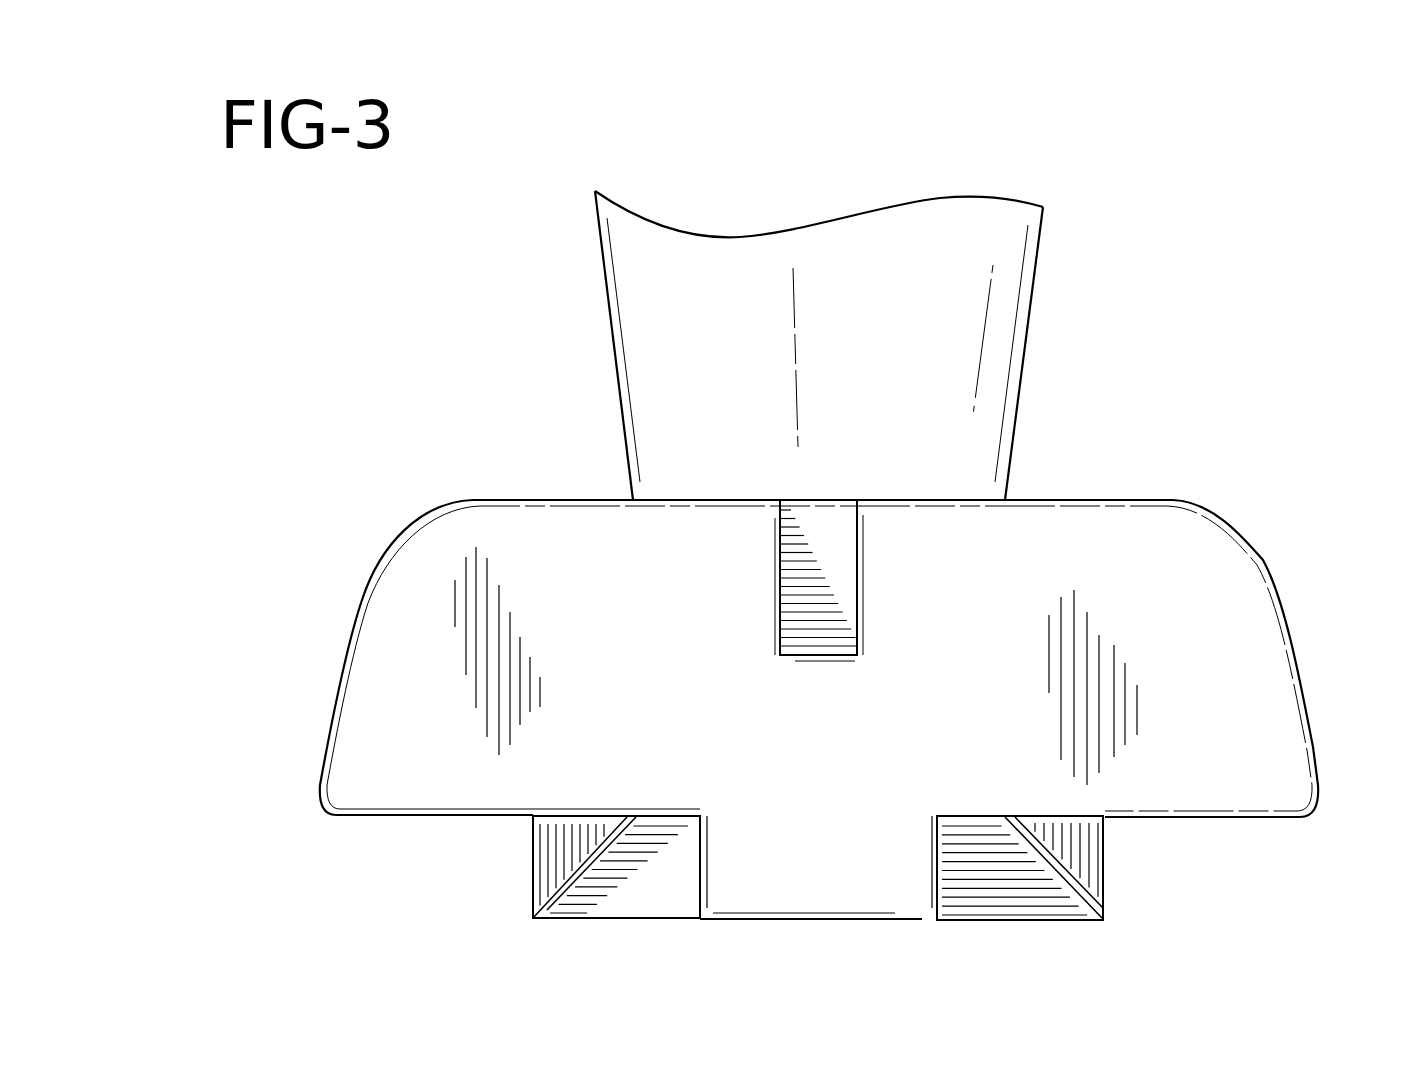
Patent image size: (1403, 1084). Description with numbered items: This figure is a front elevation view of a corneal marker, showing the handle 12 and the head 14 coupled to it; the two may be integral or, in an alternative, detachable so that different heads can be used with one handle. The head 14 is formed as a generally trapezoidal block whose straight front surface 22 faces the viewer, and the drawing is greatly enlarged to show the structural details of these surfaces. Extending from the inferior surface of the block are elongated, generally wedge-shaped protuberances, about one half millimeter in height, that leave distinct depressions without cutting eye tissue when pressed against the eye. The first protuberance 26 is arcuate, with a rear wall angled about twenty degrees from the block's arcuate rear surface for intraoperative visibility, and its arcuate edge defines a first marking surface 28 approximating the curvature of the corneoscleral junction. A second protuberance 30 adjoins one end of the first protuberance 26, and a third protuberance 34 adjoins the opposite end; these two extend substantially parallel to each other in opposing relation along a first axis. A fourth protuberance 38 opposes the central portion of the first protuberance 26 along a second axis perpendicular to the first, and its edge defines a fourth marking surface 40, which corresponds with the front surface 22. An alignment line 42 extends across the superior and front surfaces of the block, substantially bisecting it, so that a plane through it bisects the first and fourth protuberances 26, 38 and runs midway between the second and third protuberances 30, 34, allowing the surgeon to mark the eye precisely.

The handle 12 is at (595, 342).
The head 14 is at (312, 622).
The front surface 22 is at (1213, 590).
The first protuberance 26 is at (627, 902).
The first marking surface 28 is at (685, 920).
The second protuberance 30 is at (533, 838).
The third protuberance 34 is at (1093, 858).
The fourth protuberance 38 is at (867, 880).
The fourth marking surface 40 is at (843, 920).
The alignment line 42 is at (857, 563).